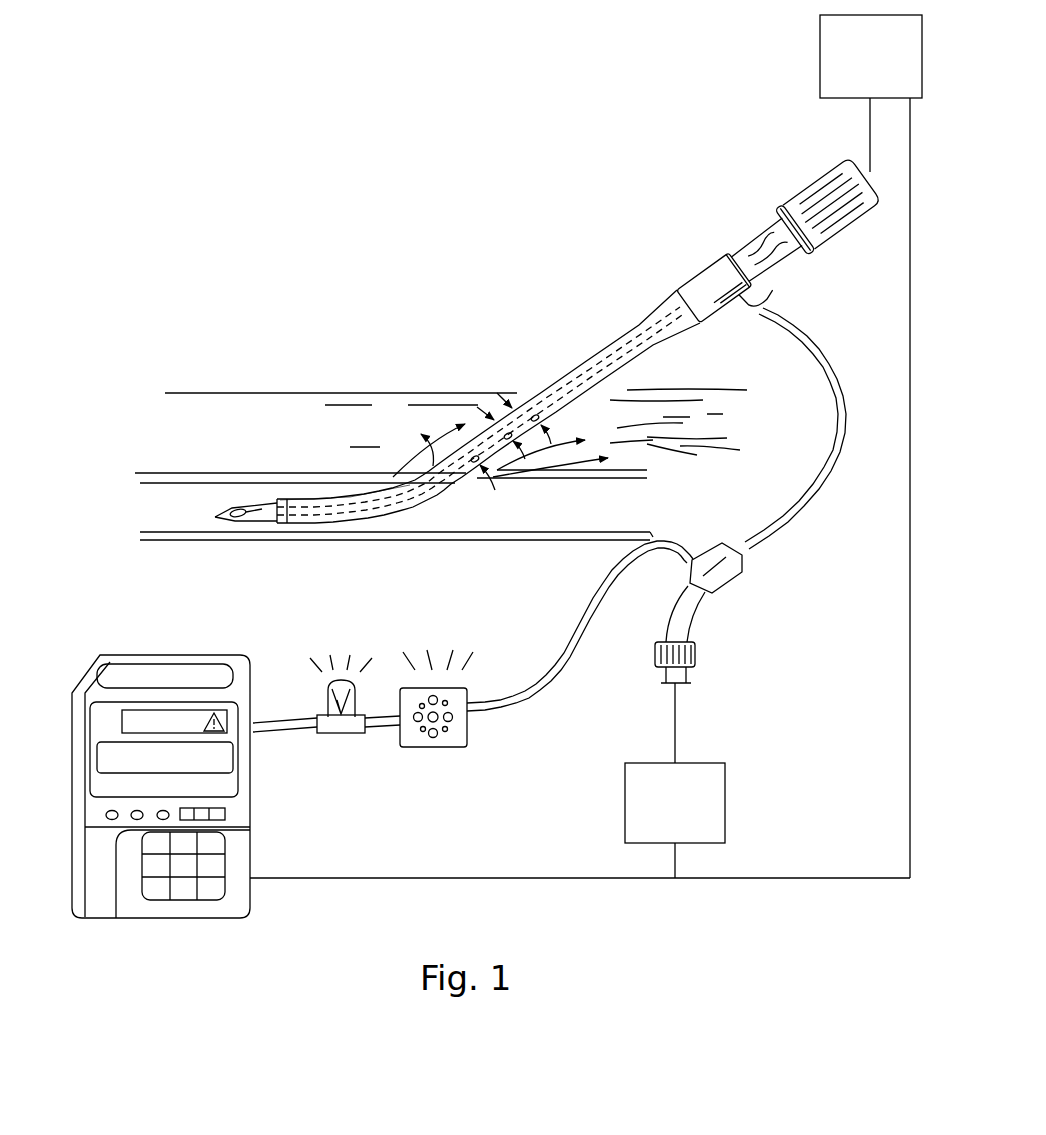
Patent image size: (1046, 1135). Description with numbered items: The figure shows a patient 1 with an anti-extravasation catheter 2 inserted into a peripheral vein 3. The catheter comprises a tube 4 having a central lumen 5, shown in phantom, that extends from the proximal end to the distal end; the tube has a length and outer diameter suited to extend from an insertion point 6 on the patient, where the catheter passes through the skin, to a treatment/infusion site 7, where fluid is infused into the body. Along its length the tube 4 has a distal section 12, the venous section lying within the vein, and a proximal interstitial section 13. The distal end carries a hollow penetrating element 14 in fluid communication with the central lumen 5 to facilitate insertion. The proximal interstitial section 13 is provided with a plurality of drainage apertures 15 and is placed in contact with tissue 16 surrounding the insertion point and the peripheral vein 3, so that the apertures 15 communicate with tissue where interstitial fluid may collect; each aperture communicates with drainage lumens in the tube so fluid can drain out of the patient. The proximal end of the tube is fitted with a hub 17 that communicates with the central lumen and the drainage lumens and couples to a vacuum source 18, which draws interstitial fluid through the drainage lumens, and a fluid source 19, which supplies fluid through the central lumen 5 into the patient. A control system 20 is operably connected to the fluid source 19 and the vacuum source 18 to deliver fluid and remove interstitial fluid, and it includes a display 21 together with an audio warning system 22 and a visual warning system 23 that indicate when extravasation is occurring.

The patient 1 is at (205, 338).
The anti-extravasation catheter 2 is at (617, 316).
The peripheral vein 3 is at (197, 473).
The tube 4 is at (590, 357).
The central lumen 5 is at (665, 308).
The insertion point 6 is at (642, 378).
The treatment/infusion site 7 is at (190, 508).
The distal section 12 is at (328, 488).
The proximal interstitial section 13 is at (592, 424).
The hollow penetrating element 14 is at (220, 522).
The drainage apertures 15 is at (537, 416).
The tissue 16 is at (385, 403).
The hub 17 is at (695, 268).
The vacuum source 18 is at (727, 812).
The fluid source 19 is at (820, 60).
The control system 20 is at (185, 888).
The display 21 is at (92, 751).
The audio warning system 22 is at (337, 733).
The visual warning system 23 is at (440, 748).